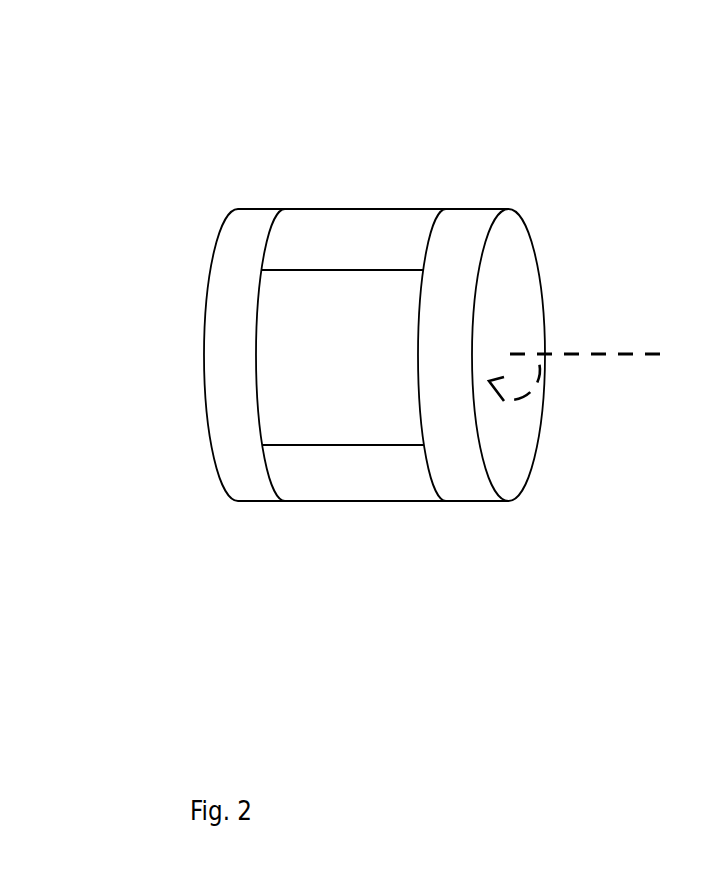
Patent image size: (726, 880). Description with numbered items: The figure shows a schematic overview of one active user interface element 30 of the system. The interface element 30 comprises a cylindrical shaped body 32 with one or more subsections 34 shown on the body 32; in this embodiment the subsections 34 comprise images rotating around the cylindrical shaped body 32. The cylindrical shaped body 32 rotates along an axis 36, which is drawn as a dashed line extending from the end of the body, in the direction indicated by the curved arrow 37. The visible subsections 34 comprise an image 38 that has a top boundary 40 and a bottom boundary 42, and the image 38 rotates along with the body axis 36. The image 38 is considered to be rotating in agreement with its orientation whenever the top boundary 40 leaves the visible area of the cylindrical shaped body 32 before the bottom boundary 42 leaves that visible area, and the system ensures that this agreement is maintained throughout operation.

The active user interface element 30 is at (121, 137).
The cylindrical shaped body 32 is at (527, 270).
The subsections 34 is at (373, 213).
The axis 36 is at (592, 355).
The arrow 37 is at (513, 402).
The image 38 is at (340, 285).
The top boundary 40 is at (268, 267).
The bottom boundary 42 is at (367, 447).